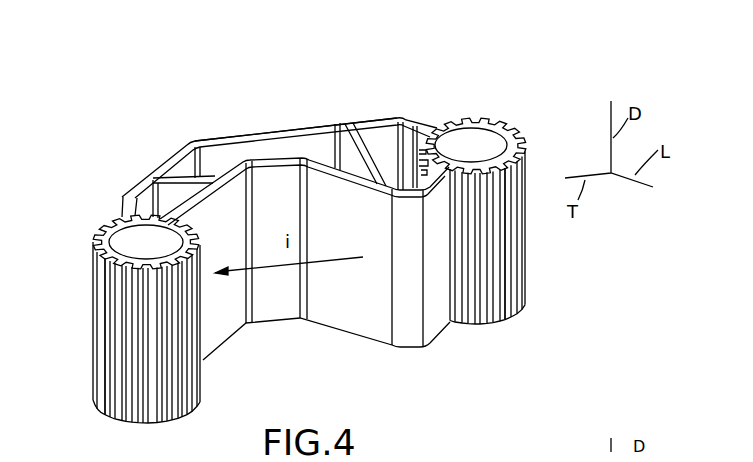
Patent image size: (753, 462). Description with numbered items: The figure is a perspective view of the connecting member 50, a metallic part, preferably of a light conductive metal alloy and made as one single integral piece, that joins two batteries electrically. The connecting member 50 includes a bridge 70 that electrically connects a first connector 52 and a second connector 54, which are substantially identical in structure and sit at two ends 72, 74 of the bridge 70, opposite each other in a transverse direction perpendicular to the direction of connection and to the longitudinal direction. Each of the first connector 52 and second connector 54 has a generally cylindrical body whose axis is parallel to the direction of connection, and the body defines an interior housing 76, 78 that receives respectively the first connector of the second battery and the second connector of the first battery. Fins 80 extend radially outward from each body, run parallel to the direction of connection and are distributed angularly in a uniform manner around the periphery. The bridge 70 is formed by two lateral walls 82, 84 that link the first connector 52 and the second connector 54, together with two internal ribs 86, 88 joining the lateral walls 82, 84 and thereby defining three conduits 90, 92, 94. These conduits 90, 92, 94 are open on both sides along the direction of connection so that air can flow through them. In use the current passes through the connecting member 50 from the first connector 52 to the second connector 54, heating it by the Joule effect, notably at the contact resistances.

The connecting member 50 is at (91, 113).
The first connector 52 is at (478, 194).
The second connector 54 is at (132, 243).
The bridge 70 is at (282, 118).
The end of the bridge 72 is at (435, 110).
The end of the bridge 74 is at (118, 188).
The interior housing 76 is at (458, 145).
The interior housing 78 is at (150, 242).
The fins 80 is at (110, 405).
The lateral wall 82 is at (250, 136).
The lateral wall 84 is at (338, 303).
The internal rib 86 is at (365, 145).
The internal rib 88 is at (180, 180).
The conduit 90 is at (375, 158).
The conduit 92 is at (318, 143).
The conduit 94 is at (168, 203).